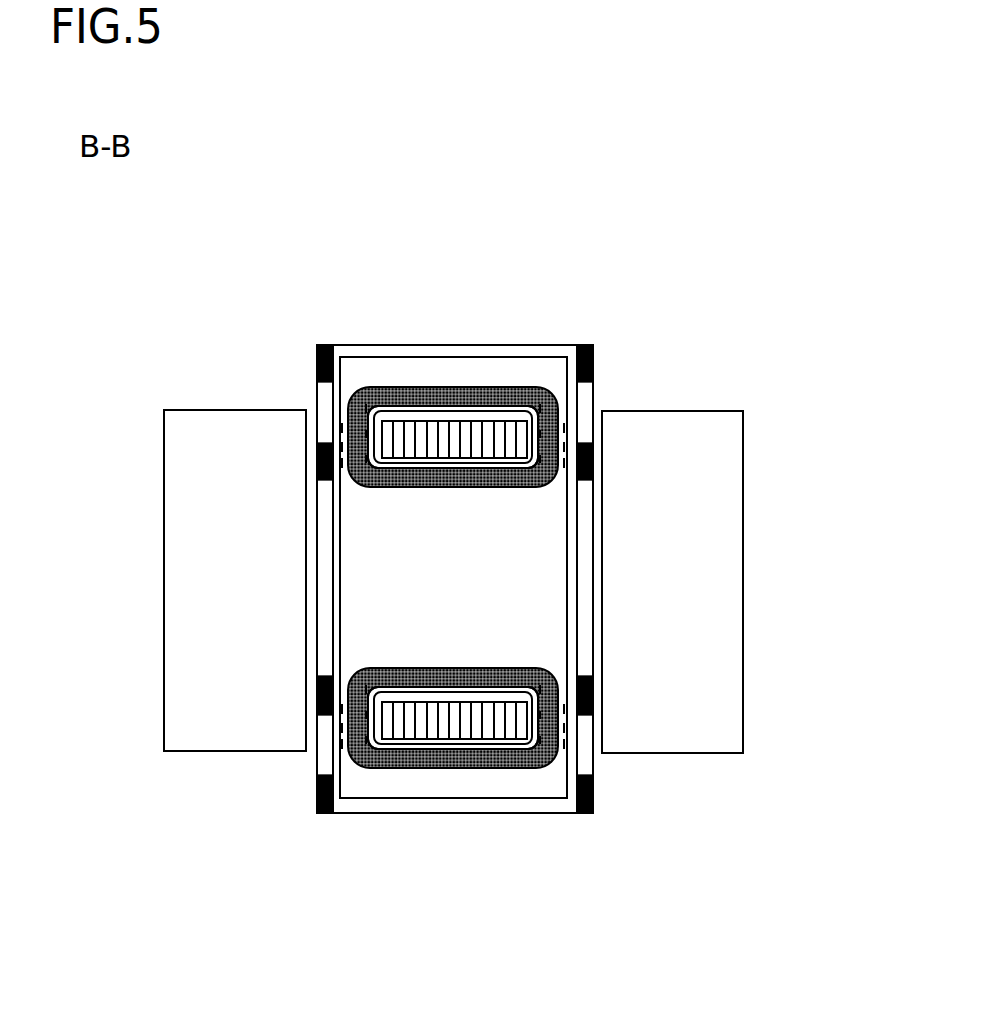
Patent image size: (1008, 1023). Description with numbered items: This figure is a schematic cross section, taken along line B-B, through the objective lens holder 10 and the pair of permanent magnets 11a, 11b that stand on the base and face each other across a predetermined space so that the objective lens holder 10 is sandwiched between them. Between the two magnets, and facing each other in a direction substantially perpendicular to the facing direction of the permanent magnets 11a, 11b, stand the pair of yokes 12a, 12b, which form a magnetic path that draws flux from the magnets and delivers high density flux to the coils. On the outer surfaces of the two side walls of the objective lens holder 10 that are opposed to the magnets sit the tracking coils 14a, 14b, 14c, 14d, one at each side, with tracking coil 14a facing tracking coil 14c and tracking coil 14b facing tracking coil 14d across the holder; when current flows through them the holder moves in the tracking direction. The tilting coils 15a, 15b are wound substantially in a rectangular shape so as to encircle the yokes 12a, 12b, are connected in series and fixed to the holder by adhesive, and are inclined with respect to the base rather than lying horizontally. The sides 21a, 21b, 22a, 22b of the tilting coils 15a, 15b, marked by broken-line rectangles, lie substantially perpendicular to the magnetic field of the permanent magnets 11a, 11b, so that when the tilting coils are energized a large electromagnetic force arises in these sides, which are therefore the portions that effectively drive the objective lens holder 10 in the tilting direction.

The objective lens holder 10 is at (350, 345).
The permanent magnet 11a is at (743, 598).
The permanent magnet 11b is at (164, 548).
The yoke 12a is at (473, 728).
The yoke 12b is at (472, 420).
The tracking coil 14a is at (593, 797).
The tracking coil 14b is at (593, 362).
The tracking coil 14c is at (317, 798).
The tracking coil 14d is at (317, 365).
The tilting coil 15a is at (432, 768).
The tilting coil 15b is at (440, 388).
The side of tilting coil 21a is at (355, 737).
The side of tilting coil 21b is at (557, 732).
The side of tilting coil 22a is at (352, 418).
The side of tilting coil 22b is at (557, 415).